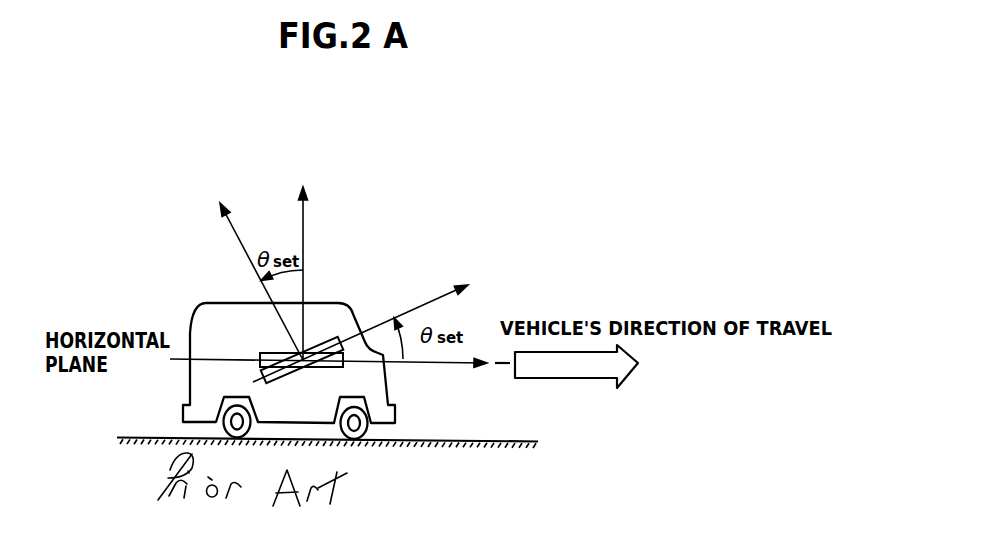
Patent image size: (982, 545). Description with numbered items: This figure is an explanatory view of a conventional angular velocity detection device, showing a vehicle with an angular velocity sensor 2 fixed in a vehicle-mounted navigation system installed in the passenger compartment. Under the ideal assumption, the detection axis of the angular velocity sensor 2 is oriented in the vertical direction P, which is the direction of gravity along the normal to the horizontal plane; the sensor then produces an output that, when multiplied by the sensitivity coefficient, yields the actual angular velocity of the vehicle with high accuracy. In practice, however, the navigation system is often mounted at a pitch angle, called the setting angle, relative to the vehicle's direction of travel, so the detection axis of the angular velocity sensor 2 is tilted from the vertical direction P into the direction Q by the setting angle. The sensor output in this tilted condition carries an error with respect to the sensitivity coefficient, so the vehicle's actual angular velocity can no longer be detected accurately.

The angular velocity sensor 2 is at (302, 368).
The vertical direction P is at (302, 262).
The tilted direction Q is at (253, 270).